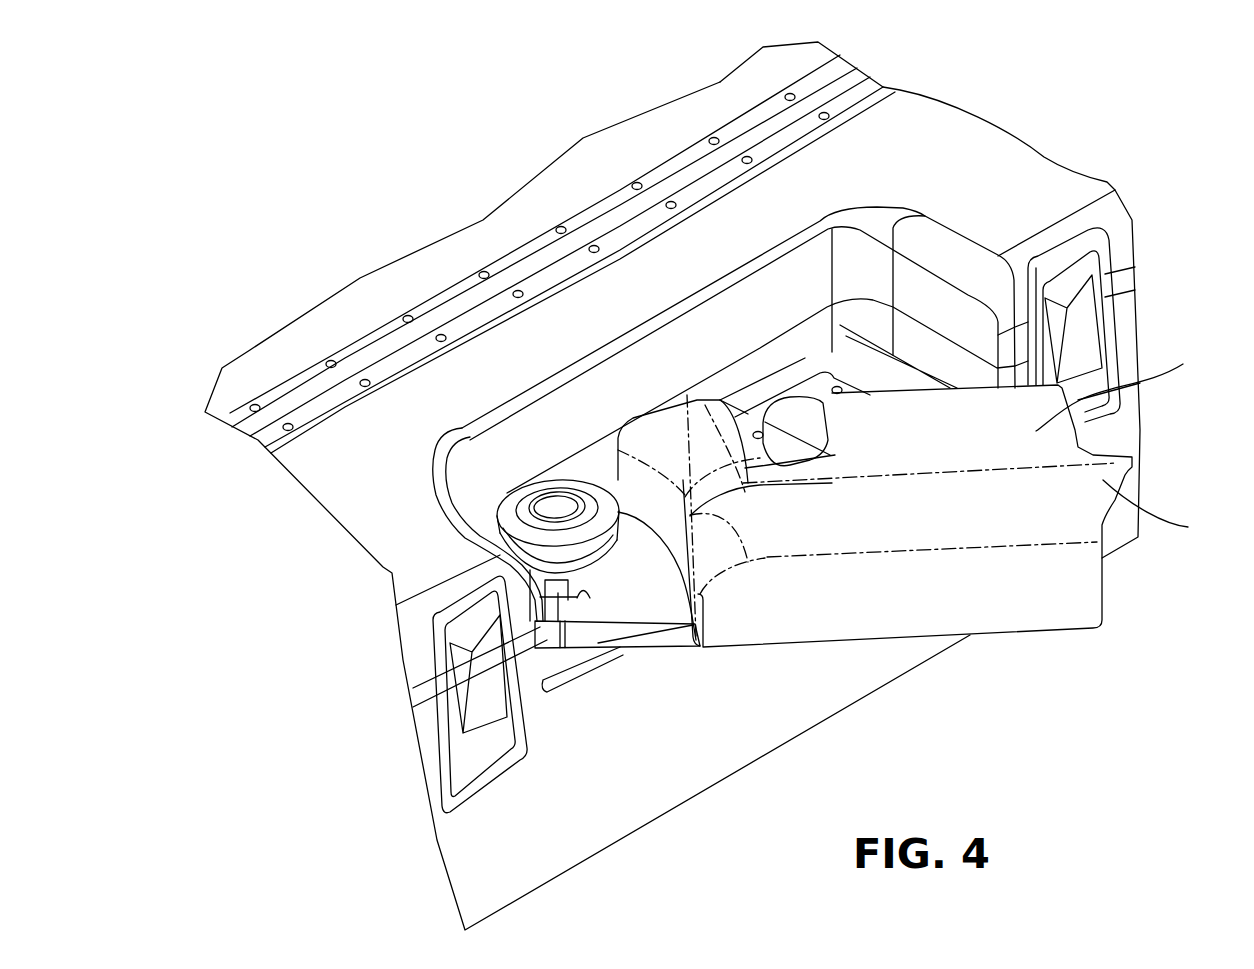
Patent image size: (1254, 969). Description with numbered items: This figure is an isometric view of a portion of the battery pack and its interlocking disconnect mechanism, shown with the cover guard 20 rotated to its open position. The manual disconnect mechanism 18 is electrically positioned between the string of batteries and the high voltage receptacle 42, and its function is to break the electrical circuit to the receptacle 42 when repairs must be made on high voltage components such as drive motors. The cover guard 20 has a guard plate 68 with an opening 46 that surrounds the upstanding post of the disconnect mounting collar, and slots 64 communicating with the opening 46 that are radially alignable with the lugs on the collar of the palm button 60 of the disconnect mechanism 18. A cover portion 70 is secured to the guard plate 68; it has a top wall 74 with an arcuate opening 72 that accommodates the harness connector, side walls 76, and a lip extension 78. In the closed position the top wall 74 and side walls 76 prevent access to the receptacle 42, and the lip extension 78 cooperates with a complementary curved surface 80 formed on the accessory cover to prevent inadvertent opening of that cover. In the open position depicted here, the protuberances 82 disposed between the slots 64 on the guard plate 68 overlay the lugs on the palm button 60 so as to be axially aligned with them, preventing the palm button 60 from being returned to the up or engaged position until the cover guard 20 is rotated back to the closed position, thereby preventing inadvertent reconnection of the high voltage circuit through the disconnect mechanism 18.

The manual disconnect mechanism 18 is at (504, 505).
The cover guard 20 is at (770, 645).
The high voltage receptacle 42 is at (800, 405).
The opening 46 is at (590, 600).
The palm button 60 is at (517, 527).
The slots 64 is at (600, 595).
The guard plate 68 is at (645, 605).
The cover portion 70 is at (1084, 432).
The arcuate opening 72 is at (802, 402).
The top wall 74 is at (1121, 379).
The side walls 76 is at (633, 477).
The lip extension 78 is at (1161, 511).
The curved surface 80 is at (984, 285).
The protuberances 82 is at (555, 650).